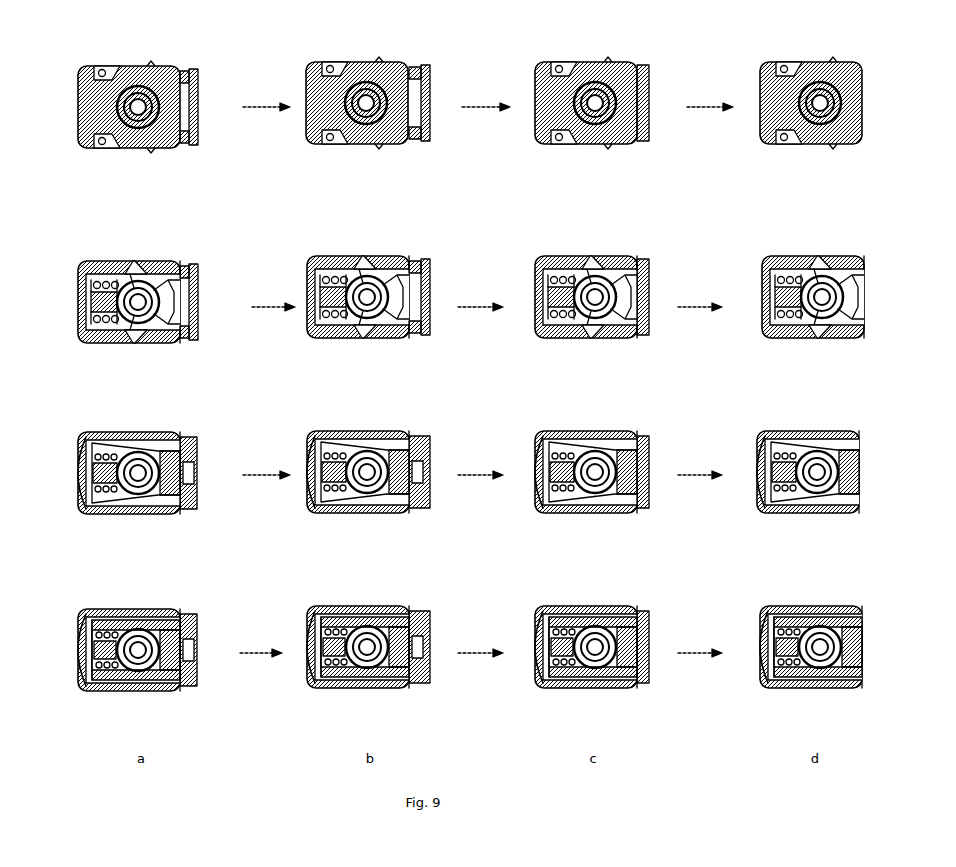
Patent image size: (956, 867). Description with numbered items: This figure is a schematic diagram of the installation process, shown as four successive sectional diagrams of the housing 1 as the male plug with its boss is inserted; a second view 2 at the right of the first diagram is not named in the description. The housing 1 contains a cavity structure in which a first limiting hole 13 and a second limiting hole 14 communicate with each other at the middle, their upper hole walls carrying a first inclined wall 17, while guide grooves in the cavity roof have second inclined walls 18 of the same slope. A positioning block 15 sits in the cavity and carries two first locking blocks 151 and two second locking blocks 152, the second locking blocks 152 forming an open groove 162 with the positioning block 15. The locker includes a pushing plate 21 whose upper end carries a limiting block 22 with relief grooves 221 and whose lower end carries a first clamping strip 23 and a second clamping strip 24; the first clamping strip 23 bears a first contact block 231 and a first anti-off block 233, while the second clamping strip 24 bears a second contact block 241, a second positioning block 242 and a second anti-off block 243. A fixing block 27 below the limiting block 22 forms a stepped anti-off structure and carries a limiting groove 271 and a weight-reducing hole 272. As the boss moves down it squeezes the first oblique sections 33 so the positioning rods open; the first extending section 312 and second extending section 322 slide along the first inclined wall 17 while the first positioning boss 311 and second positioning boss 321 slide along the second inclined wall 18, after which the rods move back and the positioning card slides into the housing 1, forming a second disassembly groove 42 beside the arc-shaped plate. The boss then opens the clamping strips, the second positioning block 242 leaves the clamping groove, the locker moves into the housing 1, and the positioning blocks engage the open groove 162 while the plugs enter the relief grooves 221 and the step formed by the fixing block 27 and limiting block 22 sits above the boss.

The housing 1 is at (73, 107).
The mounting flange 2 is at (202, 92).
The first limiting hole 13 is at (108, 430).
The second limiting hole 14 is at (103, 520).
The positioning block 15 is at (93, 300).
The first inclined wall 17 is at (162, 260).
The second inclined wall 18 is at (123, 63).
The pushing plate 21 is at (200, 322).
The limiting block 22 is at (192, 288).
The first clamping strip 23 is at (187, 145).
The second clamping strip 24 is at (187, 72).
The fixing block 27 is at (195, 682).
The first oblique section 33 is at (132, 268).
The second disassembly groove 42 is at (87, 685).
The first locking block 151 is at (93, 437).
The second locking block 152 is at (97, 315).
The open groove 162 is at (88, 498).
The relief groove 221 is at (177, 288).
The first contact block 231 is at (135, 677).
The first anti-off block 233 is at (158, 517).
The second contact block 241 is at (130, 625).
The second positioning block 242 is at (92, 273).
The second anti-off block 243 is at (155, 443).
The limiting groove 271 is at (188, 648).
The weight-reducing hole 272 is at (187, 477).
The first positioning boss 311 is at (102, 68).
The first extending section 312 is at (152, 62).
The second positioning boss 321 is at (103, 145).
The second extending section 322 is at (152, 148).